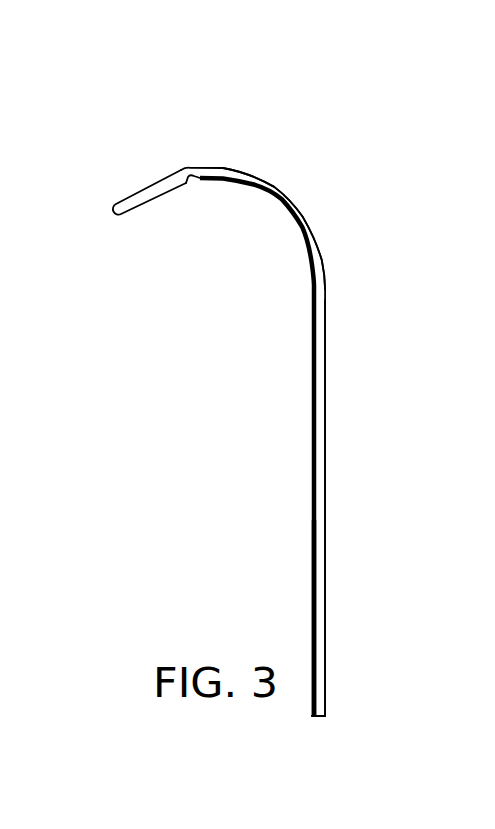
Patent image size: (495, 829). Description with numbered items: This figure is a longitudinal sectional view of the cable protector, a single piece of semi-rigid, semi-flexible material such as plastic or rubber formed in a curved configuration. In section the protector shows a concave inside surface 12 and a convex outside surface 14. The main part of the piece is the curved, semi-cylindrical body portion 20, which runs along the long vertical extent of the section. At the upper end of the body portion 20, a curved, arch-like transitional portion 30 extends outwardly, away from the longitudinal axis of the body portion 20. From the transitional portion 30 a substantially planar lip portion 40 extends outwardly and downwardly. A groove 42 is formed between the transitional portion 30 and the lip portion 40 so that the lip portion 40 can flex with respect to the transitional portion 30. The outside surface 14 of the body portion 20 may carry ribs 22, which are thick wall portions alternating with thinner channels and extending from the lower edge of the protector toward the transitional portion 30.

The inside surface 12 is at (327, 382).
The outside surface 14 is at (312, 407).
The body portion 20 is at (340, 498).
The ribs 22 is at (313, 539).
The transitional portion 30 is at (271, 180).
The lip portion 40 is at (138, 190).
The groove 42 is at (191, 183).